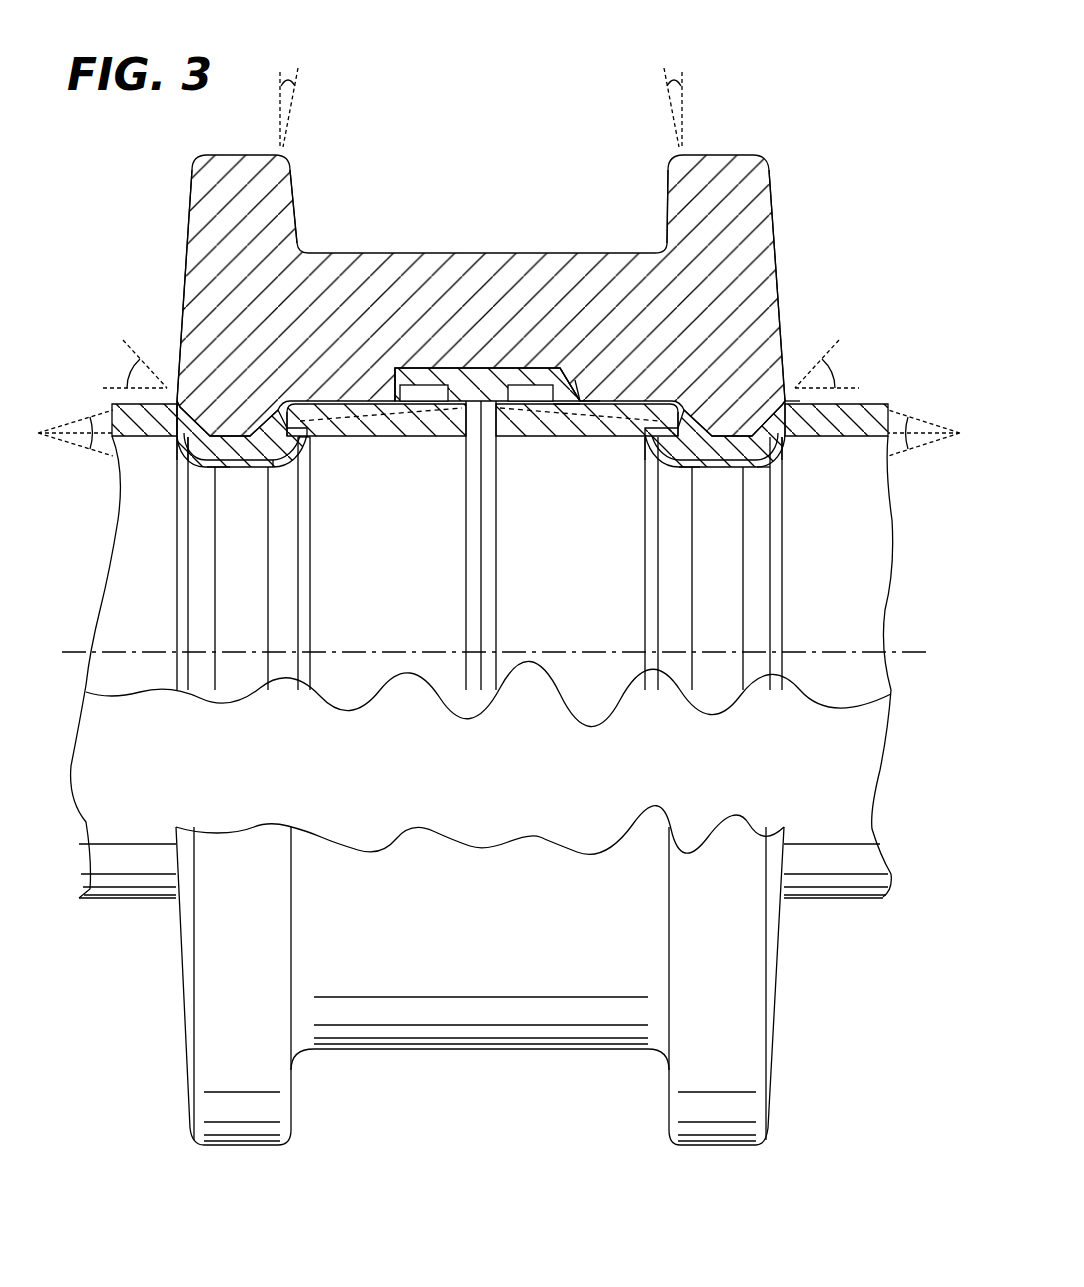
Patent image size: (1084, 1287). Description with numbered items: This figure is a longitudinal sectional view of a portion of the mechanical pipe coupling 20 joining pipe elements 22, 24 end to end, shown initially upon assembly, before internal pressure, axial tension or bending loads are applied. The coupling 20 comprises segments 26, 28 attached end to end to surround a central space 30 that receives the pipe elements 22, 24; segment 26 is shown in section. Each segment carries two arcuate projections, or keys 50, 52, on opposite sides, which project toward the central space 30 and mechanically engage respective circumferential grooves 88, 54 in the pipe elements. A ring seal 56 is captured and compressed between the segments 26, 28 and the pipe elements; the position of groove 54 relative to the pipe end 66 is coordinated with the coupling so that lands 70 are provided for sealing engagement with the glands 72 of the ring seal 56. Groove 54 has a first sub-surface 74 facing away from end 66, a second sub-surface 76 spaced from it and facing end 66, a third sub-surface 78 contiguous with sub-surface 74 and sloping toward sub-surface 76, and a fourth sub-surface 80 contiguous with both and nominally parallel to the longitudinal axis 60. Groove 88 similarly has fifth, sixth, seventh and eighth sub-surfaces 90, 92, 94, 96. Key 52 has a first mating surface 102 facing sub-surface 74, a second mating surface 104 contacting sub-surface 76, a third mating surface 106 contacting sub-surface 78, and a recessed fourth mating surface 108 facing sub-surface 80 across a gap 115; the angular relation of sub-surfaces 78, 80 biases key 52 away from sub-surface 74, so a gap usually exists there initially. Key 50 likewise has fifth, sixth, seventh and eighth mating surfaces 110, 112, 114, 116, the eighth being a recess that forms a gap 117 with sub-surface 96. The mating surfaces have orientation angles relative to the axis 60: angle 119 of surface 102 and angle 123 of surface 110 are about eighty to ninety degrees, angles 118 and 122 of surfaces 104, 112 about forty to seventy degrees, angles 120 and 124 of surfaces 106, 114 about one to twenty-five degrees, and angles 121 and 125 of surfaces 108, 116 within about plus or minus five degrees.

The mechanical pipe coupling 20 is at (536, 173).
The pipe element 22 is at (117, 403).
The pipe element 24 is at (863, 403).
The segment 26 is at (743, 163).
The segment 28 is at (740, 943).
The central space 30 is at (423, 621).
The key 50 is at (245, 423).
The key 52 is at (703, 427).
The circumferential groove 54 is at (707, 483).
The ring seal 56 is at (493, 365).
The longitudinal axis 60 is at (813, 650).
The end 66 is at (490, 522).
The lands 70 is at (597, 400).
The glands 72 is at (562, 375).
The first sub-surface 74 is at (633, 423).
The second sub-surface 76 is at (792, 425).
The third sub-surface 78 is at (710, 443).
The fourth sub-surface 80 is at (757, 490).
The second groove 88 is at (232, 470).
The fifth sub-surface 90 is at (320, 436).
The sixth sub-surface 92 is at (200, 432).
The seventh sub-surface 94 is at (292, 452).
The eighth sub-surface 96 is at (210, 445).
The first mating surface 102 is at (577, 373).
The second mating surface 104 is at (750, 360).
The third mating surface 106 is at (700, 432).
The fourth mating surface 108 is at (783, 465).
The fifth mating surface 110 is at (263, 430).
The sixth mating surface 112 is at (218, 407).
The seventh mating surface 114 is at (260, 427).
The gap 115 is at (673, 317).
The eighth mating surface 116 is at (215, 412).
The gap 117 is at (212, 475).
The orientation angle 118 is at (837, 380).
The orientation angle 119 is at (667, 83).
The orientation angle 120 is at (565, 422).
The orientation angle 121 is at (895, 460).
The orientation angle 122 is at (130, 375).
The orientation angle 123 is at (283, 83).
The orientation angle 124 is at (390, 425).
The orientation angle 125 is at (100, 455).